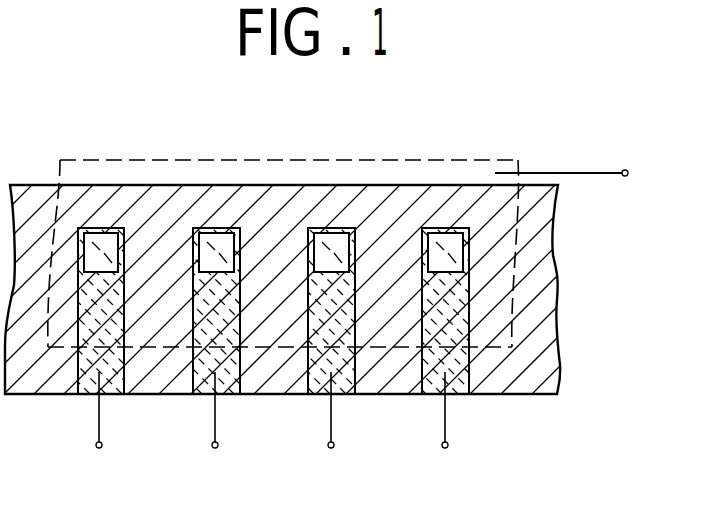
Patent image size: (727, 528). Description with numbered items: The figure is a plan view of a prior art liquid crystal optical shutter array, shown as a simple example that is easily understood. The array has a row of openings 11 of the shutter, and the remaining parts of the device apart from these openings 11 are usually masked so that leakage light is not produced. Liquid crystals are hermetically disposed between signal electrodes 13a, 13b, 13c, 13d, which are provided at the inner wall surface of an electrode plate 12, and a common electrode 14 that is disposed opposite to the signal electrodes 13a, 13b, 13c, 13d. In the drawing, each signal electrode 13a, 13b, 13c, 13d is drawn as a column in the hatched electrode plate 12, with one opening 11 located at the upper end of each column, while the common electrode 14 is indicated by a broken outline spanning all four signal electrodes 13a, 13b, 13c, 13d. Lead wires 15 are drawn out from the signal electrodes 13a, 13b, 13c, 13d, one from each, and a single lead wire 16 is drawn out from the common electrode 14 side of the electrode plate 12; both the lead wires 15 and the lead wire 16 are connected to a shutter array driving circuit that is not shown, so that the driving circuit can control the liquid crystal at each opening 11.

The opening 11 is at (101, 234).
The electrode plate 12 is at (540, 357).
The signal electrode 13a is at (80, 358).
The signal electrode 13b is at (193, 372).
The signal electrode 13c is at (308, 370).
The signal electrode 13d is at (423, 372).
The common electrode 14 is at (488, 160).
The lead wire 15 is at (445, 469).
The lead wire 16 is at (579, 172).